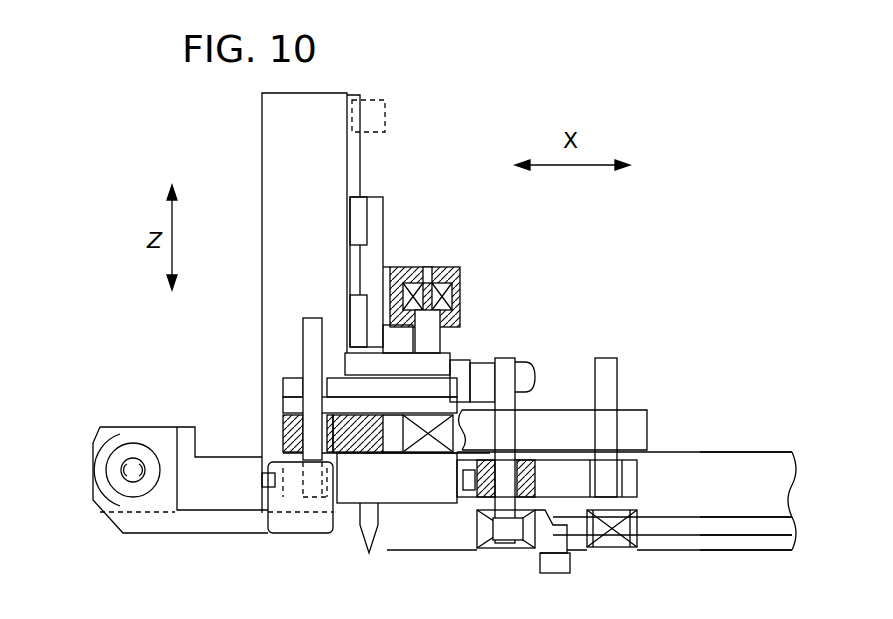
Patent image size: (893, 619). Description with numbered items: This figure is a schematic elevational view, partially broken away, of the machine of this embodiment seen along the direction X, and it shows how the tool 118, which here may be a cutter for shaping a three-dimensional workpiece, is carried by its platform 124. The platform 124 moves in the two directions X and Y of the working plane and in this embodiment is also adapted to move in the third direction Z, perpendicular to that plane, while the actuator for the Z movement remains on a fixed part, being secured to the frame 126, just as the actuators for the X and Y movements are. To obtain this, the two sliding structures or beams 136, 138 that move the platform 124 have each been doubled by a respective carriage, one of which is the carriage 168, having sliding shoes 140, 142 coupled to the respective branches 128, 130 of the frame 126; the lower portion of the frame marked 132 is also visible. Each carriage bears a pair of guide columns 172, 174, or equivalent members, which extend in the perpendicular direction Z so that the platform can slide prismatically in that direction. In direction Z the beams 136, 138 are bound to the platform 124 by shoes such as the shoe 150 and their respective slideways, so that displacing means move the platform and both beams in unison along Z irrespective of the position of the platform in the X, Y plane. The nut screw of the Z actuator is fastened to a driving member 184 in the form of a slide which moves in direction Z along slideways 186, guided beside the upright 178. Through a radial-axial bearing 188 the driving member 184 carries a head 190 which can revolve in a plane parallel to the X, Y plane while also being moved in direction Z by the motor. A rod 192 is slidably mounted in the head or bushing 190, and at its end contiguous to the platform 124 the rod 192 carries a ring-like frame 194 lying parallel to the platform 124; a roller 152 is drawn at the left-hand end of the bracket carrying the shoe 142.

The tool 118 is at (362, 535).
The platform 124 is at (413, 490).
The frame 126 is at (734, 449).
The branch of the frame 128 is at (777, 488).
The branch of the frame 130 is at (230, 470).
The lower rail portion 132 is at (765, 527).
The beam 136 is at (563, 487).
The beam 138 is at (547, 420).
The sliding shoe 140 is at (637, 537).
The sliding shoe 142 is at (274, 493).
The shoe 150 is at (560, 563).
The roller 152 is at (120, 443).
The carriage 168 is at (535, 546).
The guide column 172 is at (473, 352).
The guide column 174 is at (312, 357).
The column 178 is at (272, 150).
The driving member 184 is at (380, 248).
The slideway 186 is at (357, 157).
The radial-axial bearing 188 is at (462, 292).
The head 190 is at (470, 352).
The rod 192 is at (530, 373).
The ring-like frame 194 is at (352, 388).